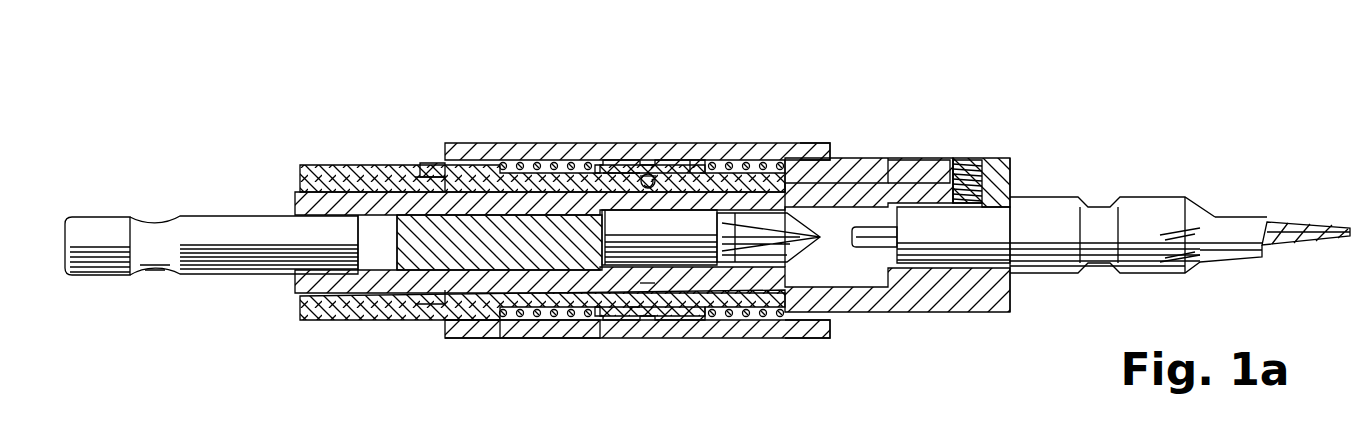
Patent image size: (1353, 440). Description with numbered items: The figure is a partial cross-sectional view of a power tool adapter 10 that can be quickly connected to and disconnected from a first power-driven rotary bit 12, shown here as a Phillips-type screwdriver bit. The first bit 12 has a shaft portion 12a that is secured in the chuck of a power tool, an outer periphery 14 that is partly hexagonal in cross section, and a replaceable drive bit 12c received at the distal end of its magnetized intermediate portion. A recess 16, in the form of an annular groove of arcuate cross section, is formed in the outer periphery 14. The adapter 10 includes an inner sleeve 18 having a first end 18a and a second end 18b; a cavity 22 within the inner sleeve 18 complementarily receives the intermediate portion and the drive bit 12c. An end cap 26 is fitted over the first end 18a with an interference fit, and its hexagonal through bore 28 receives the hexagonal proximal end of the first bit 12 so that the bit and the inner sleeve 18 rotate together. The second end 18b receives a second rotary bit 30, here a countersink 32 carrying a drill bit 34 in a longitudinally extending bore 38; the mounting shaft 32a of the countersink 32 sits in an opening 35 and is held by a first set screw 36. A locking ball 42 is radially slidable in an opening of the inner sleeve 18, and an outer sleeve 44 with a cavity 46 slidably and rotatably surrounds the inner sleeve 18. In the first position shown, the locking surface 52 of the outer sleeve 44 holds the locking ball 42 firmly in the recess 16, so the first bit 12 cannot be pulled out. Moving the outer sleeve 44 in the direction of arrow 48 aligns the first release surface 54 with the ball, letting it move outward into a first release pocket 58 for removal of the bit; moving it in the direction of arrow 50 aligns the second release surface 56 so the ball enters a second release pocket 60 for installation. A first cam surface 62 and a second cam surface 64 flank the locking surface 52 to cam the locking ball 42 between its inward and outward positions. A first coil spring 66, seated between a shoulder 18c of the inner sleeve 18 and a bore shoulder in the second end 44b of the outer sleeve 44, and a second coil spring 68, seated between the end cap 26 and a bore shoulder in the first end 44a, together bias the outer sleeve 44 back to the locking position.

The power tool adapter 10 is at (1210, 88).
The first power-driven rotary bit 12 is at (337, 295).
The shaft portion 12a is at (200, 215).
The replaceable drive bit 12c is at (740, 262).
The outer periphery 14 is at (250, 273).
The recess 16 is at (632, 310).
The inner sleeve 18 is at (513, 160).
The first end 18a is at (423, 163).
The second end 18b is at (912, 160).
The shoulder 18c is at (825, 143).
The cavity 22 is at (803, 263).
The end cap 26 is at (298, 310).
The through bore 28 is at (333, 165).
The second rotary bit 30 is at (1165, 197).
The countersink 32 is at (1200, 260).
The mounting shaft 32a is at (980, 257).
The drill bit 34 is at (1305, 222).
The opening 35 is at (1010, 197).
The first set screw 36 is at (960, 163).
The longitudinally extending bore 38 is at (1160, 230).
The locking ball 42 is at (640, 175).
The outer sleeve 44 is at (552, 337).
The first end 44a is at (443, 330).
The second end 44b is at (820, 325).
The cavity 46 is at (778, 157).
The arrow 48 is at (928, 62).
The arrow 50 is at (987, 60).
The locking surface 52 is at (650, 173).
The first release surface 54 is at (703, 170).
The second release surface 56 is at (603, 165).
The first release pocket 58 is at (690, 162).
The second release pocket 60 is at (617, 172).
The first cam surface 62 is at (647, 283).
The second cam surface 64 is at (633, 308).
The first coil spring 66 is at (750, 162).
The second coil spring 68 is at (530, 165).